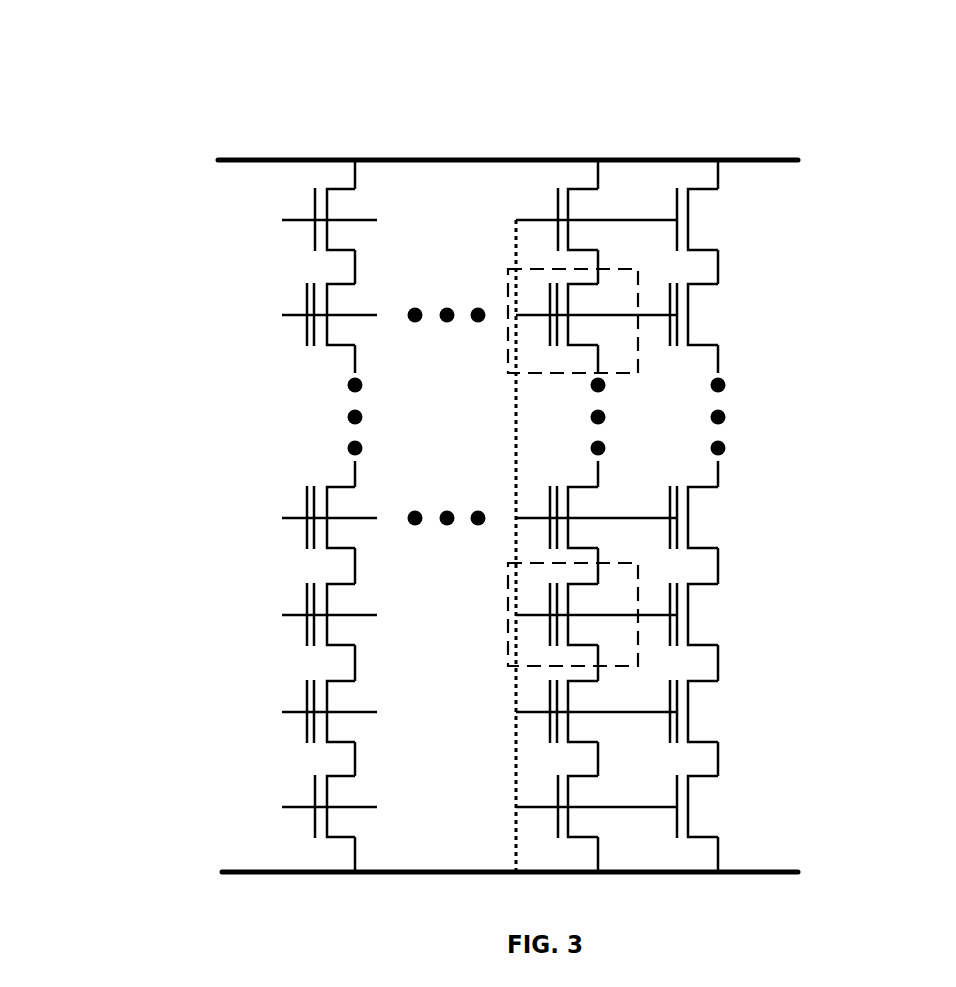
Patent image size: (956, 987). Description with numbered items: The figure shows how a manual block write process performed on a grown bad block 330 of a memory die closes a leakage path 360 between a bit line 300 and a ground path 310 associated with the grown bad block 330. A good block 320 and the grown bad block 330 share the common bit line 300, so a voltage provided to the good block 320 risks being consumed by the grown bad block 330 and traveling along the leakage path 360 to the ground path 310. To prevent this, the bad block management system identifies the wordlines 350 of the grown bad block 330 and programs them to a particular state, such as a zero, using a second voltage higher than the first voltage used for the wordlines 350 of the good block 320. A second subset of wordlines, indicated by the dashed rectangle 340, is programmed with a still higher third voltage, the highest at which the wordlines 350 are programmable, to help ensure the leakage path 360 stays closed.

The bit line 300 is at (157, 142).
The ground path 310 is at (137, 853).
The good block 320 is at (359, 87).
The grown bad block 330 is at (598, 88).
The second subset of wordlines 340 is at (508, 293).
The wordlines 350 is at (282, 318).
The leakage path 360 is at (515, 437).